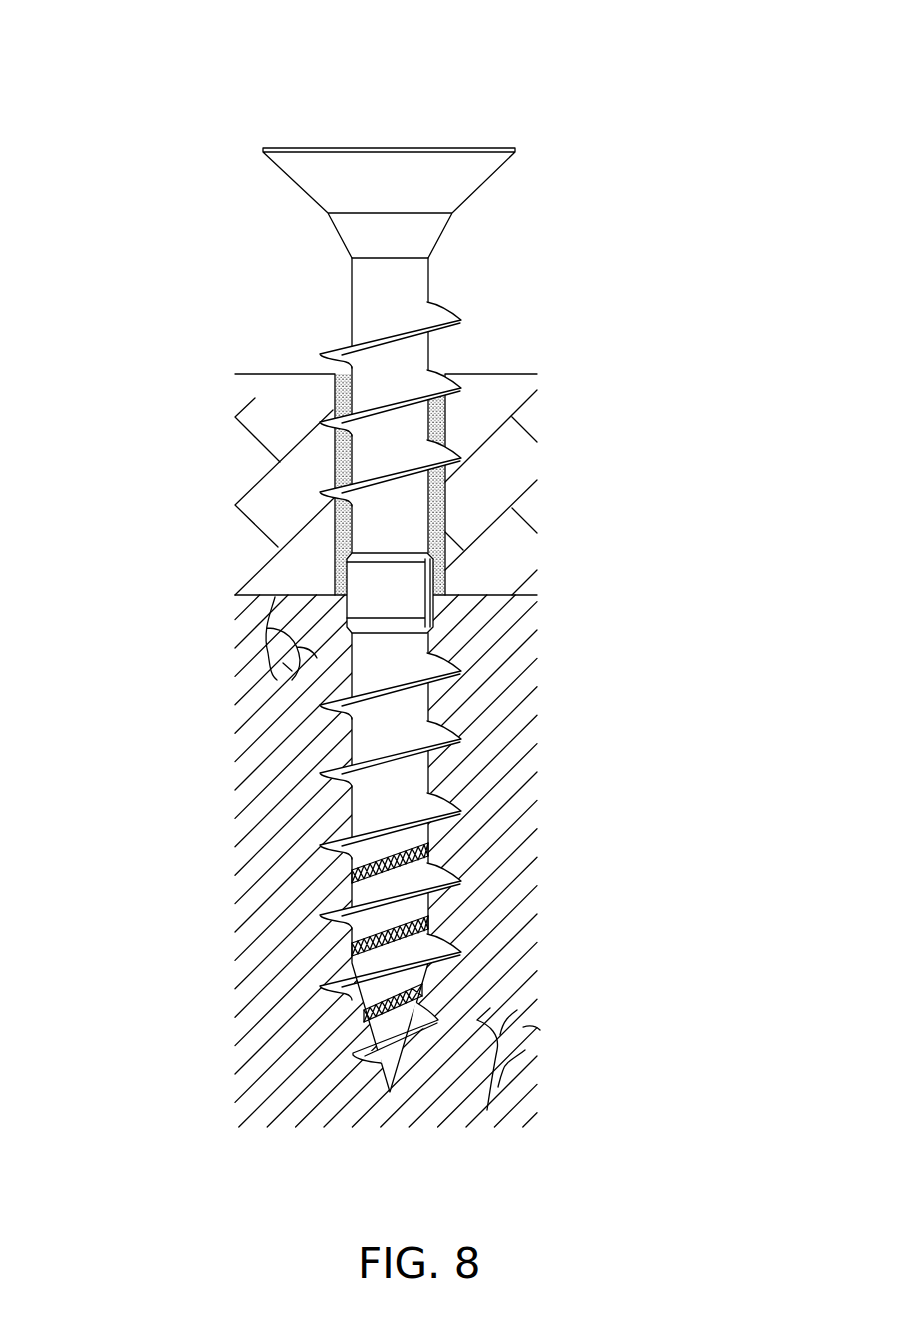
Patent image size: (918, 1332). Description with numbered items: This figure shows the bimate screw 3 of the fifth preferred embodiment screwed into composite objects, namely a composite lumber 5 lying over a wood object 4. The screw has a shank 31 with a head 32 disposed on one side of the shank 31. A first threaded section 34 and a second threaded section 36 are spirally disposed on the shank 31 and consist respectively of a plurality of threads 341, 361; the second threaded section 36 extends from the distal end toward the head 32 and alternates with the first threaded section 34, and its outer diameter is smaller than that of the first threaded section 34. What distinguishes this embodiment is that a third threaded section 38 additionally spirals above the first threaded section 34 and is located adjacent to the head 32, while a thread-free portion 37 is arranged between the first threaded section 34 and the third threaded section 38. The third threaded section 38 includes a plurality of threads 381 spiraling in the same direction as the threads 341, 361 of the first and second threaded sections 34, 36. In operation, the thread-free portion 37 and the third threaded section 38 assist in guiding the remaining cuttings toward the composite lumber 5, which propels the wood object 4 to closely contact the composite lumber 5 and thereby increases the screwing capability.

The bimate screw 3 is at (143, 121).
The head 32 is at (453, 146).
The shank 31 is at (403, 297).
The third threaded section 38 is at (410, 402).
The threads 381 is at (445, 315).
The composite lumber 5 is at (510, 373).
The thread-free portion 37 is at (405, 587).
The wood object 4 is at (240, 613).
The first threaded section 34 is at (426, 857).
The threads 341 is at (460, 742).
The second threaded section 36 is at (488, 909).
The threads 361 is at (442, 837).